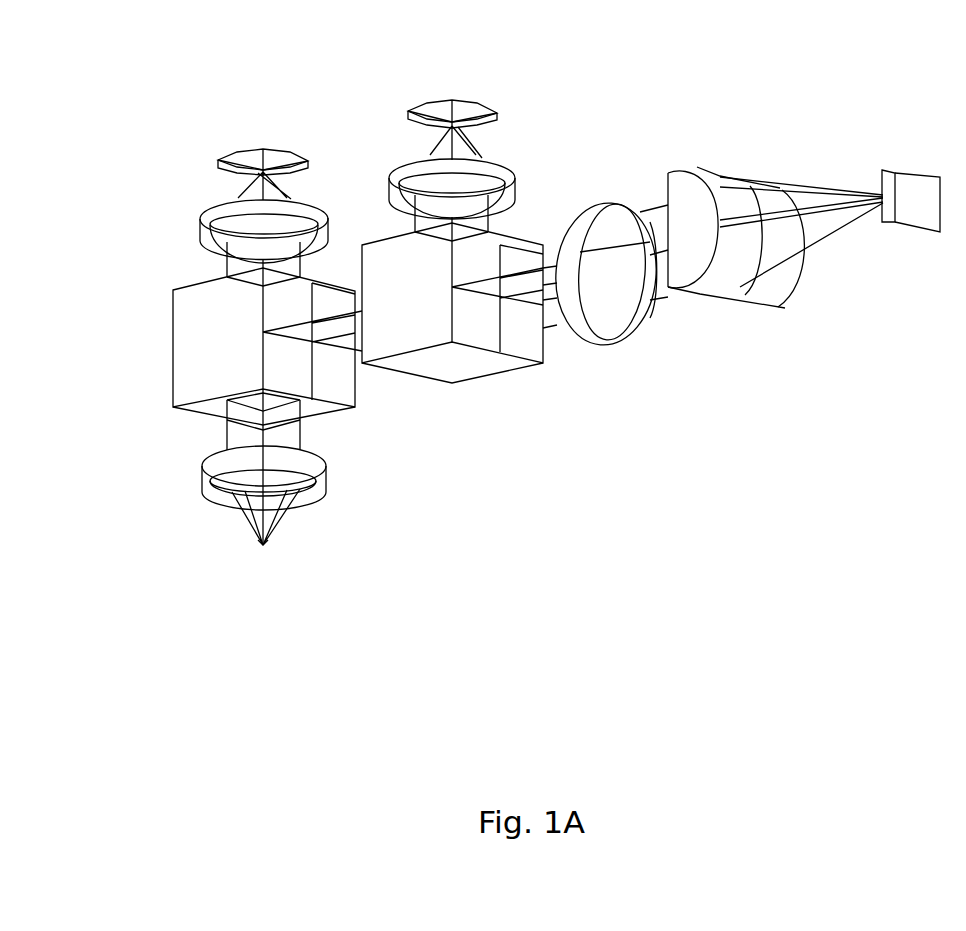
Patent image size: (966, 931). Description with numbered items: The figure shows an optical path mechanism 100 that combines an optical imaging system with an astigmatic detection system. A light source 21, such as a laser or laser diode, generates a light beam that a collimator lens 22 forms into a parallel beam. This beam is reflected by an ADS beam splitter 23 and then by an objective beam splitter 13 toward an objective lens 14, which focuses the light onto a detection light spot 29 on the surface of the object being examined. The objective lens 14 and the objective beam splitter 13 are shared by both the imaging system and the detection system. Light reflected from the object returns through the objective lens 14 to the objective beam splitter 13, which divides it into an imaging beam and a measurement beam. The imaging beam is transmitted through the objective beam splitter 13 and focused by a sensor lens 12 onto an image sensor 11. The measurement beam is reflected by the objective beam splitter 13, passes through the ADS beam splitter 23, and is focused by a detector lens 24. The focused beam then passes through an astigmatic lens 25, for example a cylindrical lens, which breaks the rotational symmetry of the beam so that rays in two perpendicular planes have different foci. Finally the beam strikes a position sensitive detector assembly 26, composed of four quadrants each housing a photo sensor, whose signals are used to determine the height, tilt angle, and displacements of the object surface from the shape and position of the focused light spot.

The optical path mechanism 100 is at (132, 128).
The image sensor 11 is at (280, 150).
The sensor lens 12 is at (305, 206).
The objective beam splitter 13 is at (348, 391).
The objective lens 14 is at (312, 471).
The detection light spot 29 is at (265, 546).
The light source 21 is at (477, 100).
The collimator lens 22 is at (505, 162).
The ADS beam splitter 23 is at (470, 355).
The detector lens 24 is at (590, 333).
The astigmatic lens 25 is at (716, 188).
The position sensitive detector (PSD) assembly 26 is at (912, 200).